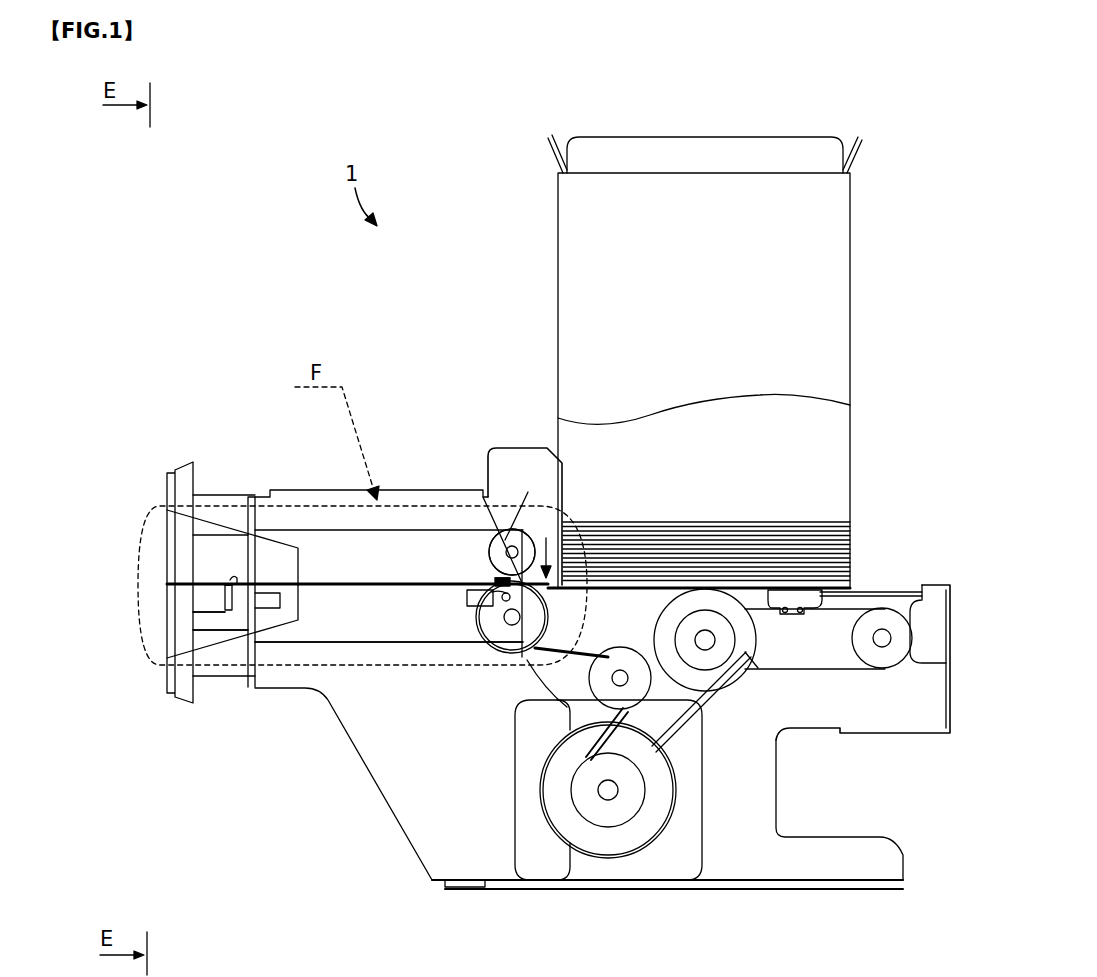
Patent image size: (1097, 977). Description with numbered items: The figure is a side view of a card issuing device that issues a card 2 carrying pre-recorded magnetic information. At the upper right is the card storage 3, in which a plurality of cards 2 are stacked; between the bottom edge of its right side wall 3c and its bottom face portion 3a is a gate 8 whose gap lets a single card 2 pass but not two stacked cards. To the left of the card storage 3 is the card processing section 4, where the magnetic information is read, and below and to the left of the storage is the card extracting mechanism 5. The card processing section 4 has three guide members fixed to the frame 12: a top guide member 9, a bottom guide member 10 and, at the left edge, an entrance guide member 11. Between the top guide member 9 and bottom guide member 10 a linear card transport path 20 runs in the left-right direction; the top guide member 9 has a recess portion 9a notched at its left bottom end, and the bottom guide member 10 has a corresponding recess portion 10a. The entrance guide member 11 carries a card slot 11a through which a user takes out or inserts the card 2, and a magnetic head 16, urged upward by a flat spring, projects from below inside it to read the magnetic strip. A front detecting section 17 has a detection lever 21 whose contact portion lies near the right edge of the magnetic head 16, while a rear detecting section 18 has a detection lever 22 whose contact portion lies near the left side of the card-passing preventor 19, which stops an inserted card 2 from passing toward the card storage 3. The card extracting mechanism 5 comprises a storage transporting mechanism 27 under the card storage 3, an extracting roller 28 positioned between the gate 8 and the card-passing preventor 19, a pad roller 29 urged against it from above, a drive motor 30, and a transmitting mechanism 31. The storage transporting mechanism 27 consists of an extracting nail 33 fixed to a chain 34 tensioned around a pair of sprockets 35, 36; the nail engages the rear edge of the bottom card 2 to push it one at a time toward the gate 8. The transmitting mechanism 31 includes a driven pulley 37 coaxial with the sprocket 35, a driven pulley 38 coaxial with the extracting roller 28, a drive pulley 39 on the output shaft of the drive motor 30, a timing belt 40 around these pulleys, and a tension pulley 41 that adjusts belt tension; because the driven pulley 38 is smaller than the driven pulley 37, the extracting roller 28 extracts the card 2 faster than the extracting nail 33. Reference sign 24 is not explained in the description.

The card 2 is at (722, 522).
The card storage 3 is at (850, 335).
The bottom face portion 3a is at (600, 592).
The right side wall 3c is at (562, 470).
The card processing section 4 is at (432, 530).
The card extracting mechanism 5 is at (765, 730).
The gate 8 is at (546, 544).
The top guide member 9 is at (292, 530).
The recess portion 9a is at (292, 565).
The bottom guide member 10 is at (388, 650).
The recess portion 10a is at (290, 606).
The entrance guide member 11 is at (190, 470).
The card slot 11a is at (180, 543).
The frame 12 is at (382, 796).
The magnetic head 16 is at (213, 613).
The front detecting section 17 is at (263, 610).
The rear detecting section 18 is at (465, 600).
The card-passing preventor 19 is at (500, 560).
The card transport path 20 is at (372, 590).
The detection lever 21 is at (236, 578).
The detection lever 22 is at (500, 582).
The roller shaft 24 is at (512, 552).
The storage transporting mechanism 27 is at (865, 680).
The extracting roller 28 is at (527, 658).
The pad roller 29 is at (525, 504).
The drive motor 30 is at (703, 835).
The transmitting mechanism 31 is at (718, 727).
The extracting nail 33 is at (798, 616).
The chain 34 is at (800, 670).
The sprocket 35 is at (735, 645).
The sprocket 36 is at (888, 608).
The driven pulley 37 is at (745, 672).
The driven pulley 38 is at (540, 614).
The drive pulley 39 is at (618, 825).
The timing belt 40 is at (680, 760).
The tension pulley 41 is at (590, 678).